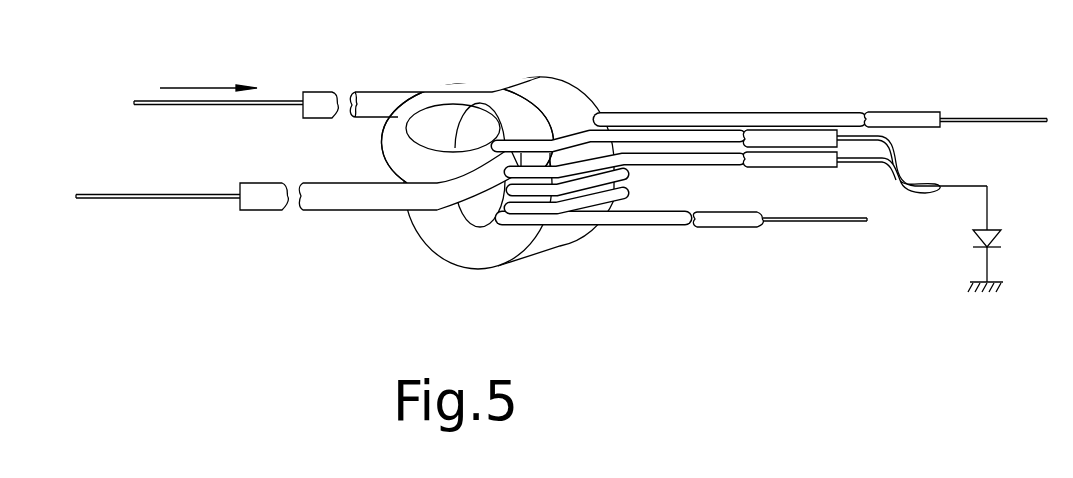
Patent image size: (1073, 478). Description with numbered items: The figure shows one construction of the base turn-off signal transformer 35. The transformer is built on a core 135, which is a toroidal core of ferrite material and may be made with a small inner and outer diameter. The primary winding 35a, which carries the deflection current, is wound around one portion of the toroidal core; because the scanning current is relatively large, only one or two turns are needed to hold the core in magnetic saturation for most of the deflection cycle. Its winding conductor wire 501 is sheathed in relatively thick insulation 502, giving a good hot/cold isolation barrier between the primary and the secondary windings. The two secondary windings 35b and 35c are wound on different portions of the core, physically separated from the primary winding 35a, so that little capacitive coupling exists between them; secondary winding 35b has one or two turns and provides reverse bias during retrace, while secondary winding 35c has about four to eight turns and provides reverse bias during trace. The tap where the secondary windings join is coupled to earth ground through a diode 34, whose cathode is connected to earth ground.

The winding conductor wire 501 is at (187, 105).
The insulation 502 is at (333, 118).
The base turn-off signal transformer 35 is at (673, 175).
The primary winding 35a is at (392, 91).
The secondary winding 35b is at (743, 110).
The secondary winding 35c is at (643, 228).
The core 135 is at (483, 270).
The diode 34 is at (1003, 239).